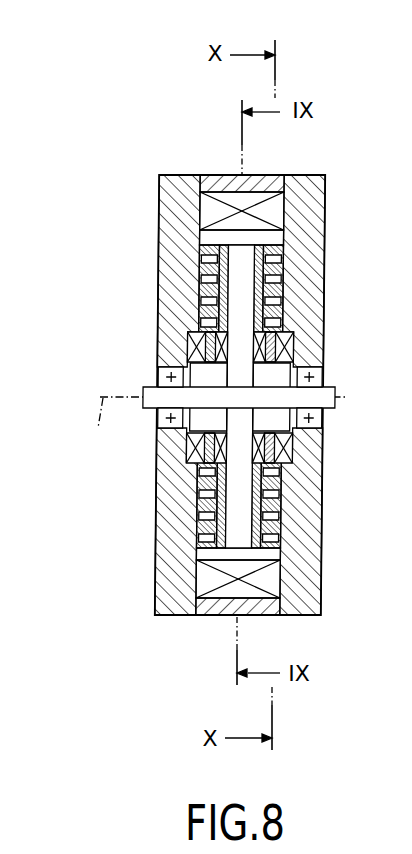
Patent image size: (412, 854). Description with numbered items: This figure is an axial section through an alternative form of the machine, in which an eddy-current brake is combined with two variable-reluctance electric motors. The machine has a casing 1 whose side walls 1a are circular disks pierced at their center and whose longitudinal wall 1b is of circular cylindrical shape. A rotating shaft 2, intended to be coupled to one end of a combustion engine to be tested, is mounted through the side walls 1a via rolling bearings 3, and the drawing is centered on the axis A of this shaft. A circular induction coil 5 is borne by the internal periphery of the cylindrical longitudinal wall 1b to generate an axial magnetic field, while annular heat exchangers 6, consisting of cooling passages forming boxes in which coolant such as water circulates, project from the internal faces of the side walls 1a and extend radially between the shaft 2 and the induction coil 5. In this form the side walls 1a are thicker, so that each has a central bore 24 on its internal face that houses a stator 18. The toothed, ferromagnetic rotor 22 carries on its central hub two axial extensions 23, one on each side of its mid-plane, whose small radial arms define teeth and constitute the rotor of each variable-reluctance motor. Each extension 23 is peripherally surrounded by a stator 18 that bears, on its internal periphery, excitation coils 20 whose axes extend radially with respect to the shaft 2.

The casing 1 is at (245, 371).
The side walls 1a is at (180, 240).
The longitudinal wall 1b is at (220, 176).
The rotating shaft 2 is at (150, 408).
The rolling bearings 3 is at (163, 430).
The circular induction coil 5 is at (190, 200).
The annular heat exchanger 6 is at (165, 553).
The stator 18 is at (192, 330).
The excitation coils 20 is at (190, 358).
The rotor 22 is at (246, 290).
The axial extensions 23 is at (170, 368).
The central bore 24 is at (198, 505).
The axis A is at (212, 423).